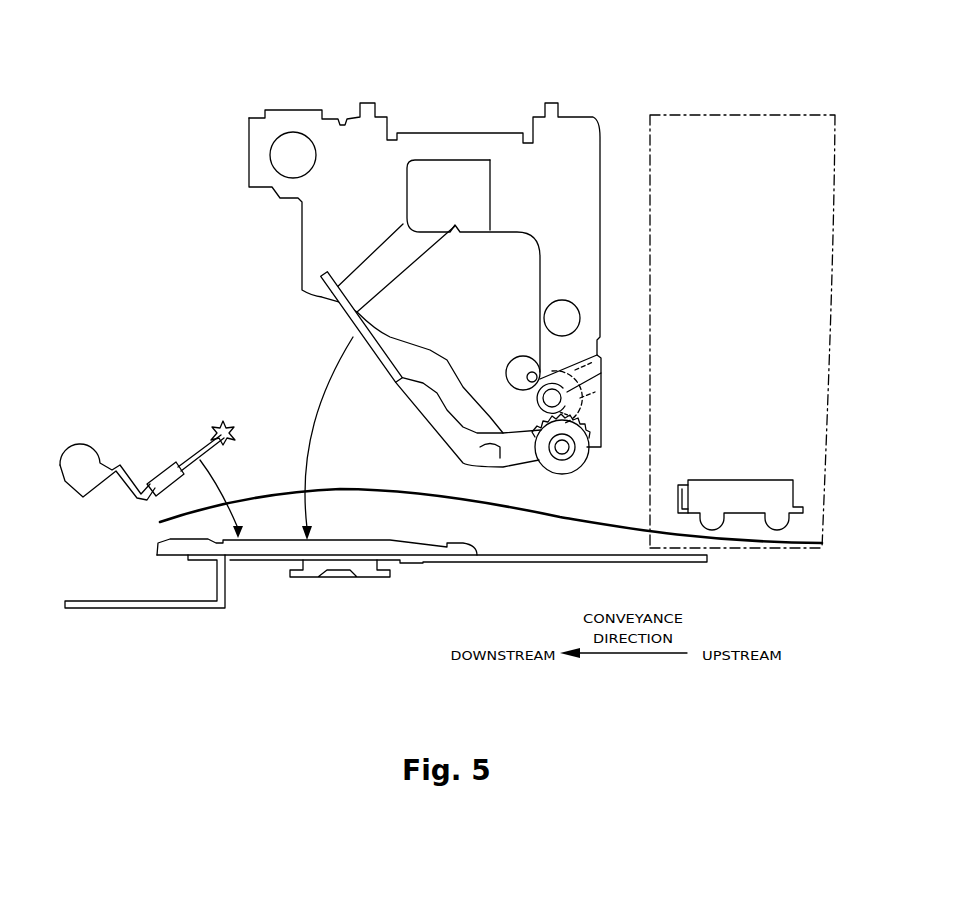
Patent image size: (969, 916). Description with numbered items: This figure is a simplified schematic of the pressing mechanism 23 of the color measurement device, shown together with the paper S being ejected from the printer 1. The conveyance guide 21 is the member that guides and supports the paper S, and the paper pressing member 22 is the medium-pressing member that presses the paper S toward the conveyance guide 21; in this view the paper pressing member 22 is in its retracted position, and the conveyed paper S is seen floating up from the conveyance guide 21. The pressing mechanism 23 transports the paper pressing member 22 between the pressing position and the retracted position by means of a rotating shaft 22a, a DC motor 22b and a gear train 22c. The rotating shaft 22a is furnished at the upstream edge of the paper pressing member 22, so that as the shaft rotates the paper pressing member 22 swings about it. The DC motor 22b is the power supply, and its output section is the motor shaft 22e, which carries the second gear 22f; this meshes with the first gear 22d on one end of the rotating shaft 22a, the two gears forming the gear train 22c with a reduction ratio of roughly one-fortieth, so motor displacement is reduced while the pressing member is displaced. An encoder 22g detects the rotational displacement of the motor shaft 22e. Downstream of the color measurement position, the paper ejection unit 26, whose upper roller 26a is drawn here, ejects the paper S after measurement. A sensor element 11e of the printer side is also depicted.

The printer 1 is at (747, 114).
The pressing mechanism 23 is at (626, 245).
The paper pressing member 22 is at (323, 291).
The rotating shaft 22a is at (575, 468).
The DC motor 22b is at (575, 395).
The gear train 22c is at (600, 398).
The first gear 22d is at (543, 457).
The motor shaft 22e is at (585, 359).
The second gear 22f is at (565, 408).
The encoder 22g is at (537, 370).
The paper ejection unit 26 is at (88, 423).
The upper roller 26a is at (232, 426).
The conveyance guide 21 is at (357, 546).
The sheet sensor 11e is at (786, 459).
The paper S is at (597, 521).